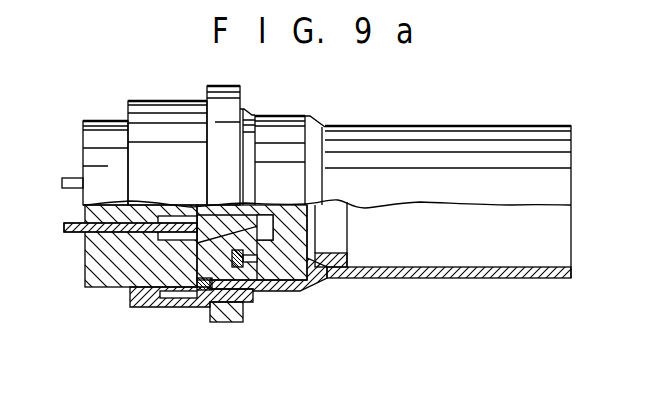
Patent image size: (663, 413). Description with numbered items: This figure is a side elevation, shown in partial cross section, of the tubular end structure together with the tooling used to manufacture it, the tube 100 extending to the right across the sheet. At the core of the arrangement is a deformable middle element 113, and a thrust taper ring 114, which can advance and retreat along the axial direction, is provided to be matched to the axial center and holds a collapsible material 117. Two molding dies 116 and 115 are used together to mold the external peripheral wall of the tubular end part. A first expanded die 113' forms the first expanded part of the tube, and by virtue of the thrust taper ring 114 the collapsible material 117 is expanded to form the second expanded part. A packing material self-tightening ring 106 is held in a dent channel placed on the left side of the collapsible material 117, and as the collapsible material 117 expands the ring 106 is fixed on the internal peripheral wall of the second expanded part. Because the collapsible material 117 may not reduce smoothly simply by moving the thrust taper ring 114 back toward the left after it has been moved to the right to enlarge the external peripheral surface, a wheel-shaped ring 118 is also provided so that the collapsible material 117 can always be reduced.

The tube 100 is at (443, 278).
The packing material self-tightening ring 106 is at (203, 290).
The deformable middle element 113 is at (120, 249).
The first expanded die 113' is at (353, 250).
The thrust taper ring 114 is at (261, 208).
The molding die 115 is at (227, 317).
The molding die 116 is at (130, 298).
The collapsible material 117 is at (240, 268).
The wheel-shaped ring 118 is at (265, 295).